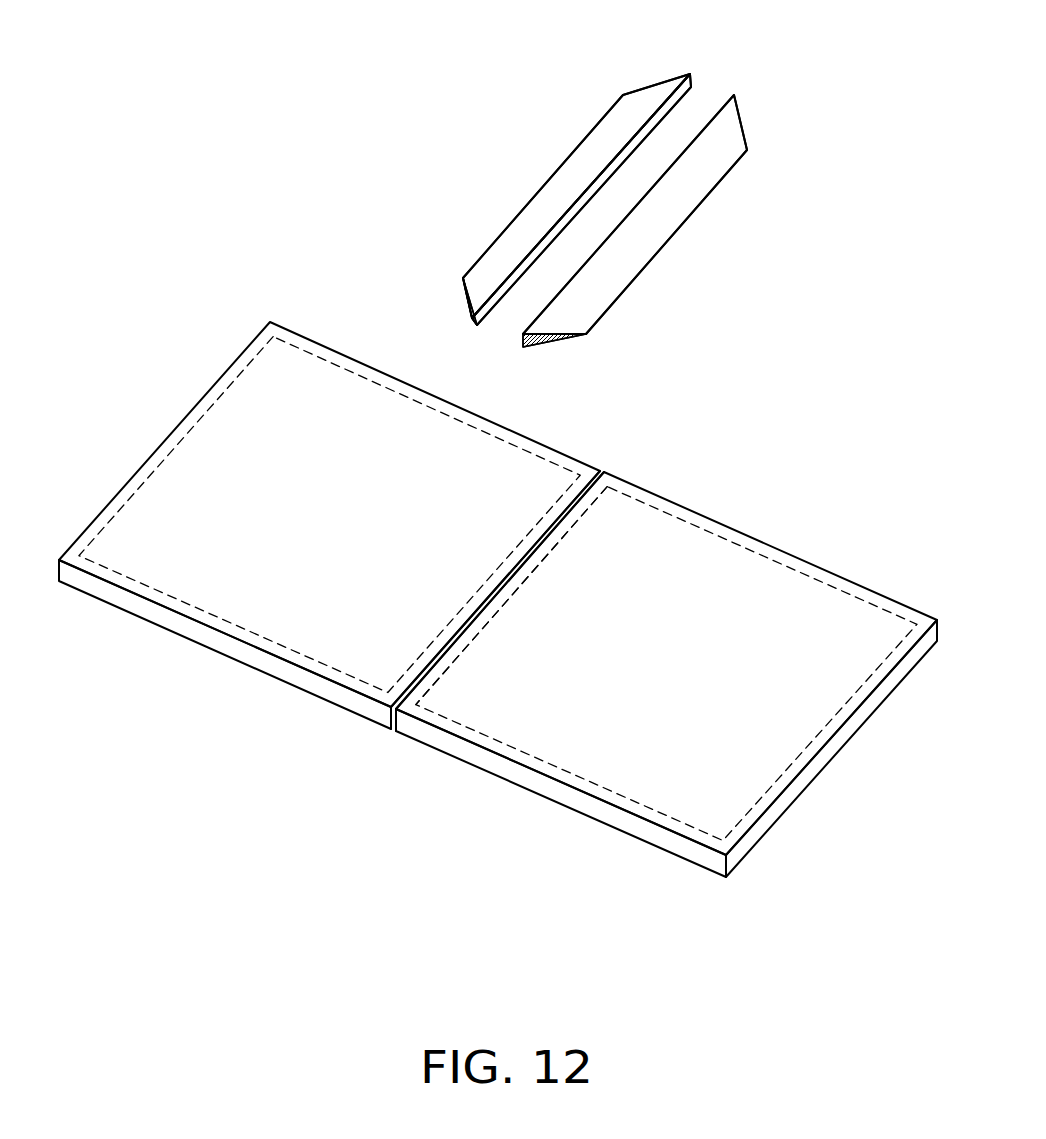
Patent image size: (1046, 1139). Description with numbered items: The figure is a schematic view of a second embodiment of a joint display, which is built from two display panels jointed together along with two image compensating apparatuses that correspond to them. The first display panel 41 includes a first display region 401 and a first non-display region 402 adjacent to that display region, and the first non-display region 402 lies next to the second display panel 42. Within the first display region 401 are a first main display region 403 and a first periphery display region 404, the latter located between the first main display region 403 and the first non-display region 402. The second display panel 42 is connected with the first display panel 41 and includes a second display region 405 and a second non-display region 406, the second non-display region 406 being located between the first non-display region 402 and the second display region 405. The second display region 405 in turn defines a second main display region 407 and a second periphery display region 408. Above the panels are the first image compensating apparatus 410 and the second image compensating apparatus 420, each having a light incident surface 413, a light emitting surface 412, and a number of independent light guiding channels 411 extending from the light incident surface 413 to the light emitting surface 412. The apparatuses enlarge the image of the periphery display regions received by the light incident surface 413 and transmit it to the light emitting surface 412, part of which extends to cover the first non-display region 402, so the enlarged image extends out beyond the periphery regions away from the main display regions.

The first display panel 41 is at (120, 595).
The second display panel 42 is at (632, 822).
The first display region 401 is at (329, 565).
The first non-display region 402 is at (397, 697).
The first main display region 403 is at (315, 525).
The first periphery display region 404 is at (432, 617).
The second display region 405 is at (624, 626).
The second non-display region 406 is at (394, 722).
The second main display region 407 is at (662, 670).
The second periphery display region 408 is at (545, 570).
The first image compensating apparatus 410 is at (512, 165).
The second image compensating apparatus 420 is at (728, 222).
The light guiding channels 411 is at (478, 317).
The light emitting surface 412 is at (627, 112).
The light incident surface 413 is at (492, 327).